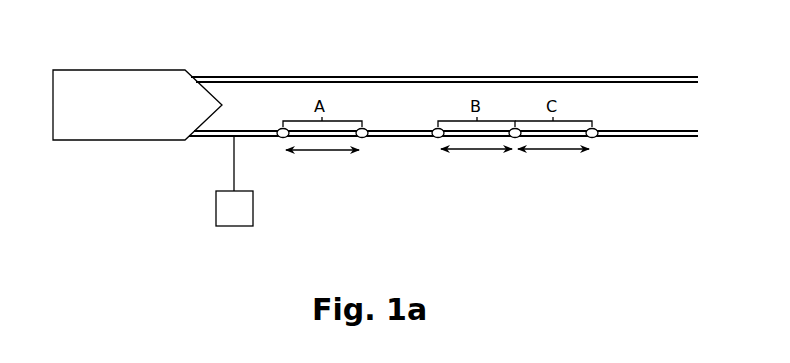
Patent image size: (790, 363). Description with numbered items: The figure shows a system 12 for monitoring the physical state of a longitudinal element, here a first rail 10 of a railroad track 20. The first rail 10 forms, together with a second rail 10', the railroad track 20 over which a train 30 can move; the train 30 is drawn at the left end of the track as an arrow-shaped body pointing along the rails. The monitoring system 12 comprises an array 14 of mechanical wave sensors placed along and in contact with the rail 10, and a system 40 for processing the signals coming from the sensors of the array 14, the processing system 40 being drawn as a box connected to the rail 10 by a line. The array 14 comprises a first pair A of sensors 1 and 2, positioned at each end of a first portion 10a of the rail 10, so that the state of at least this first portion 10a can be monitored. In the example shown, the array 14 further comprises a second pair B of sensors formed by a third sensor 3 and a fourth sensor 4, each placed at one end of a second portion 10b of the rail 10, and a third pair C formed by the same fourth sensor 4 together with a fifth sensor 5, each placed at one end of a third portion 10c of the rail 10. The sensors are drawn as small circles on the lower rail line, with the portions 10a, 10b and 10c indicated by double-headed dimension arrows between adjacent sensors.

The train 30 is at (72, 142).
The first rail 10 is at (433, 134).
The second rail 10' is at (444, 52).
The array of mechanical wave sensors 14 is at (392, 107).
The railroad track 20 is at (586, 67).
The sensor 1 is at (283, 138).
The sensor 2 is at (362, 138).
The third sensor 3 is at (438, 138).
The fourth sensor 4 is at (515, 138).
The fifth sensor 5 is at (592, 138).
The first portion 10a is at (322, 163).
The second portion 10b is at (476, 162).
The third portion 10c is at (553, 162).
The system for processing the signals 40 is at (234, 181).
The system for monitoring the physical state of the rail 12 is at (190, 218).